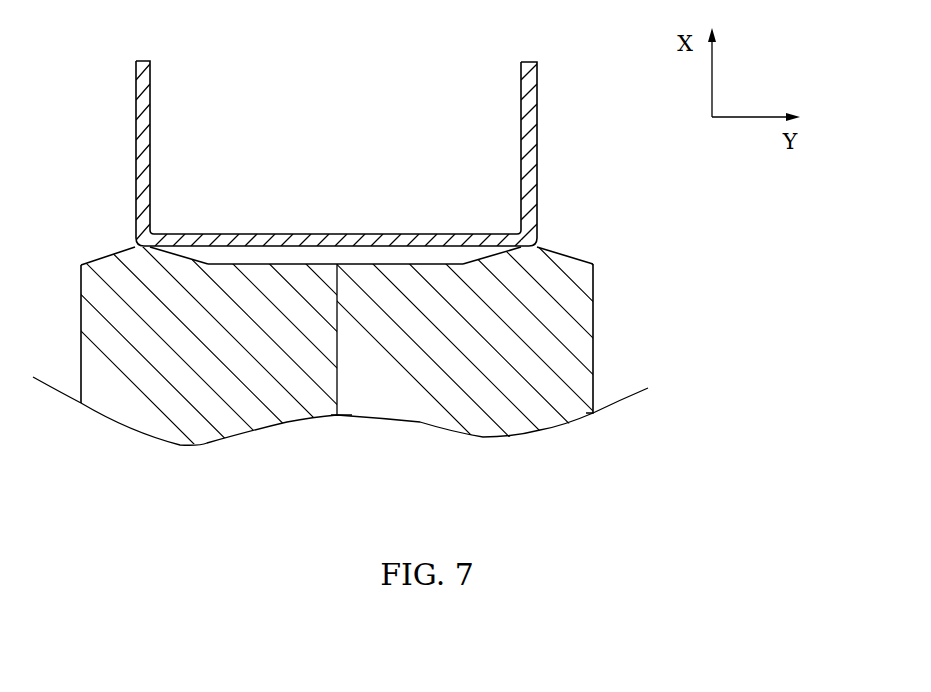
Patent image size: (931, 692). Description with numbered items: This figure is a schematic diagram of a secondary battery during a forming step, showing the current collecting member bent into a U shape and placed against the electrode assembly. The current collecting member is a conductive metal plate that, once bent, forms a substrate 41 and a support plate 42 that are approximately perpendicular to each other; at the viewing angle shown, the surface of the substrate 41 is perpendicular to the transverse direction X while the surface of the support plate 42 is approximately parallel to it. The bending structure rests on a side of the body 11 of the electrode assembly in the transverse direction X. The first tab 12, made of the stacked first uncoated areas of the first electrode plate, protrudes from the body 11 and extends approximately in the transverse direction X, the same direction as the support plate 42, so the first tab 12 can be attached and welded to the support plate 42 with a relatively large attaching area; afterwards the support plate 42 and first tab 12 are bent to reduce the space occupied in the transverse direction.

The body 11 is at (233, 430).
The first tab 12 is at (139, 241).
The substrate 41 is at (339, 234).
The support plate 42 is at (142, 147).